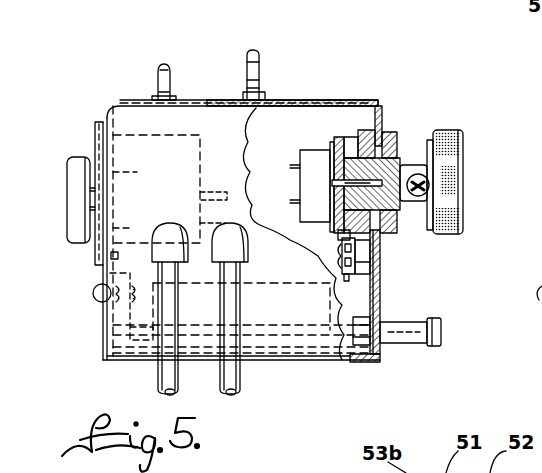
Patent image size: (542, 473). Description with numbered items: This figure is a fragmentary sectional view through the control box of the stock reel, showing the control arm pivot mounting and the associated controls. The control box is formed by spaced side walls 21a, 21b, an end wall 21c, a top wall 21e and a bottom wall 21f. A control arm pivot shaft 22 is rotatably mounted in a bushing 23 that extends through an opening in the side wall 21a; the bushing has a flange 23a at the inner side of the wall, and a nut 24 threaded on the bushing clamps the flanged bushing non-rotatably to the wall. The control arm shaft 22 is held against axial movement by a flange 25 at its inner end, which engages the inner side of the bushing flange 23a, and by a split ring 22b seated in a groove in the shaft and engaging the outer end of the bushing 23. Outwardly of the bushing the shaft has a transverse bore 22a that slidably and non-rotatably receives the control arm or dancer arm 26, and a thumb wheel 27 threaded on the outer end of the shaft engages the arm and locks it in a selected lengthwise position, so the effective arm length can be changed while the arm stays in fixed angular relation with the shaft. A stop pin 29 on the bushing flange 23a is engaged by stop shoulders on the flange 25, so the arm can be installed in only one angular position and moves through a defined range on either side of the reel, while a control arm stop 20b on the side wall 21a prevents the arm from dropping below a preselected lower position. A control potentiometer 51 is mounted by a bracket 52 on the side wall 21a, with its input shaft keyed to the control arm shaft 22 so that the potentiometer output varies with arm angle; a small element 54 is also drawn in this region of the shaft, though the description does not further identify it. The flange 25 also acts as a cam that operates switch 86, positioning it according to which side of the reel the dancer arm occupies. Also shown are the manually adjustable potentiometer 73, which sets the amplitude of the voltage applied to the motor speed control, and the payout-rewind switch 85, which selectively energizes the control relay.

The control arm stop 20b is at (410, 324).
The side wall 21a is at (382, 114).
The side wall 21b is at (108, 112).
The end wall 21c is at (258, 122).
The top wall 21e is at (306, 100).
The bottom wall 21f is at (290, 362).
The control arm pivot shaft 22 is at (456, 136).
The transverse bore 22a is at (428, 186).
The split ring 22b is at (396, 222).
The bushing 23 is at (403, 130).
The bushing flange 23a is at (365, 132).
The nut 24 is at (392, 118).
The flange 25 is at (346, 162).
The control arm 26 is at (424, 200).
The thumb wheel 27 is at (430, 160).
The stop pin 29 is at (350, 140).
The control potentiometer 51 is at (310, 205).
The bracket 52 is at (340, 262).
The pin 54 is at (336, 184).
The manually adjustable potentiometer 73 is at (167, 133).
The payout-rewind switch 85 is at (166, 64).
The switch 86 is at (340, 258).